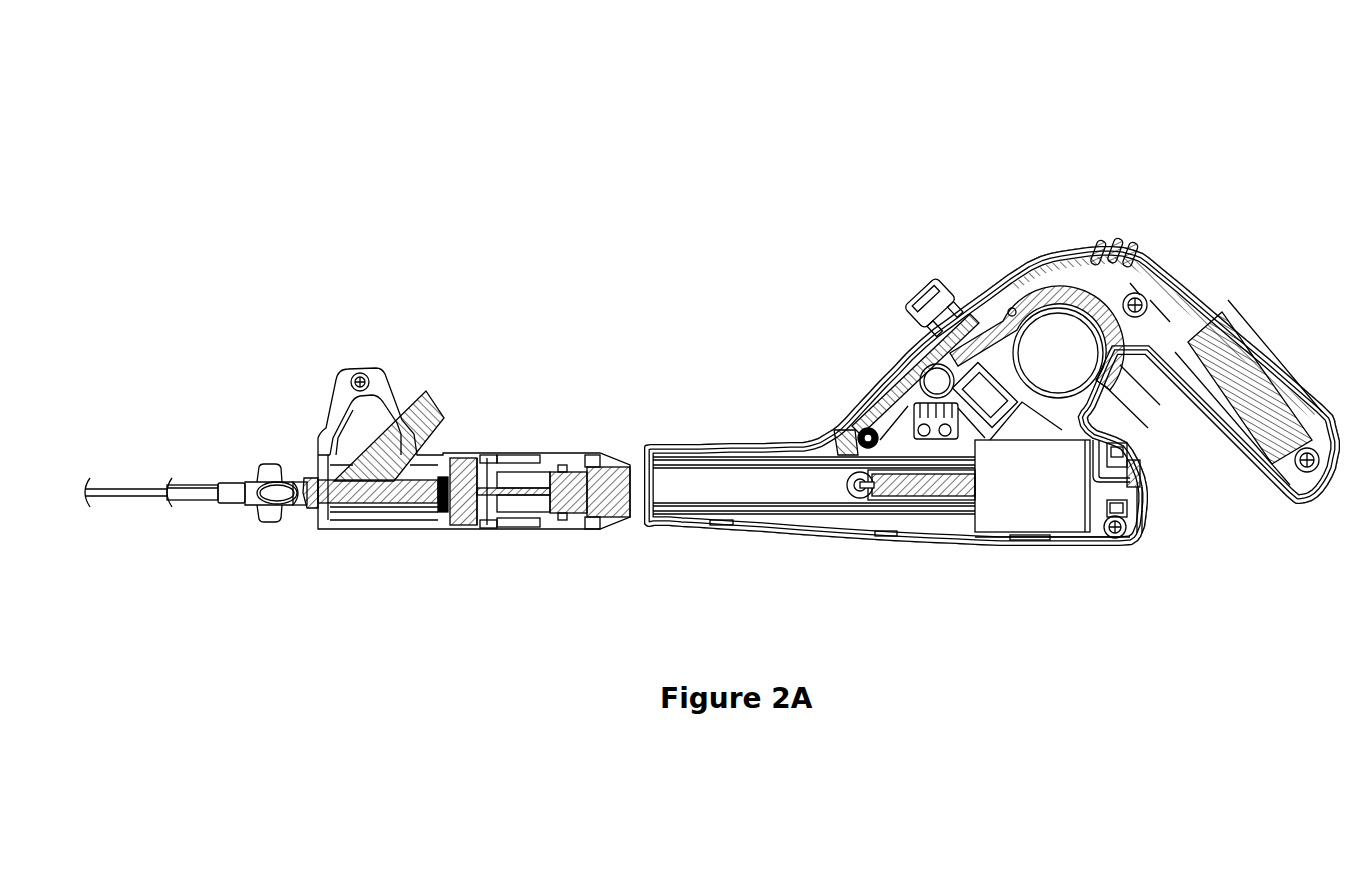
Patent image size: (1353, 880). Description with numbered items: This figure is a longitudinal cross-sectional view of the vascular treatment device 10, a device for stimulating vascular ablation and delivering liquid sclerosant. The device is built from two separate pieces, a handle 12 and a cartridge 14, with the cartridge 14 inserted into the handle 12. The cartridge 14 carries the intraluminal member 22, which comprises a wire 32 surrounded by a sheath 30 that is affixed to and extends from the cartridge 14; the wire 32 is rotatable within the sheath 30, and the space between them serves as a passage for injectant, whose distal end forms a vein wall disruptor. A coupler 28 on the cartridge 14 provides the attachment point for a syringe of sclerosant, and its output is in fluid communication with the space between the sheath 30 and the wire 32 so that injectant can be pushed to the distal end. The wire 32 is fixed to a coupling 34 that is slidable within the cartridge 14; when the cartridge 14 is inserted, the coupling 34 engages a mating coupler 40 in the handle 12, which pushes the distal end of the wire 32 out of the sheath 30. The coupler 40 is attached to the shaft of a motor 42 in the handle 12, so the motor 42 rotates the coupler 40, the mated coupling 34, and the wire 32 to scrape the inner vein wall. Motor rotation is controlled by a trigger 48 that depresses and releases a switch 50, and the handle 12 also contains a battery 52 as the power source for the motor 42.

The vascular treatment device 10 is at (462, 88).
The handle 12 is at (1178, 182).
The cartridge 14 is at (288, 330).
The intraluminal member 22 is at (148, 420).
The coupler 28 is at (418, 400).
The sheath 30 is at (195, 503).
The wire 32 is at (113, 500).
The coupling 34 is at (555, 515).
The mating coupler 40 is at (946, 494).
The motor 42 is at (1050, 510).
The trigger 48 is at (1018, 308).
The switch 50 is at (945, 360).
The battery 52 is at (1258, 388).